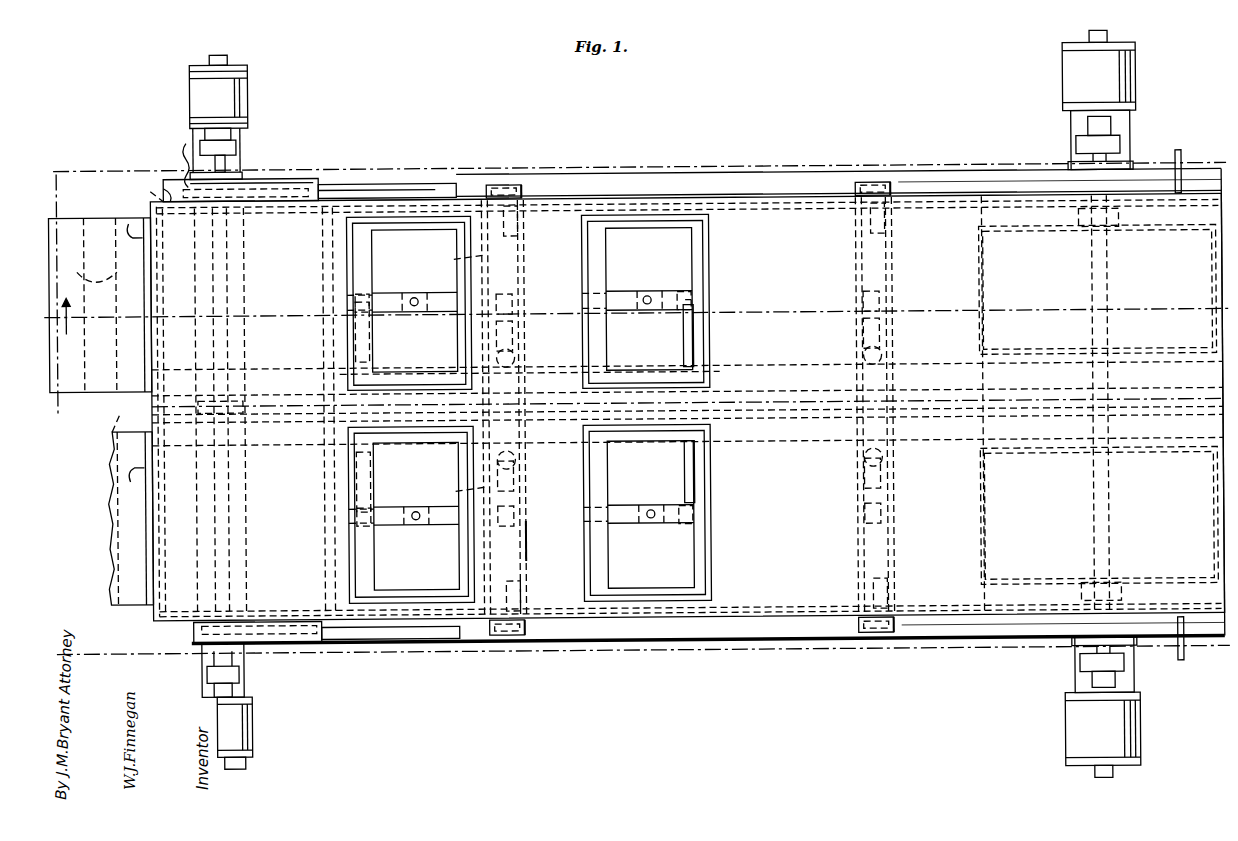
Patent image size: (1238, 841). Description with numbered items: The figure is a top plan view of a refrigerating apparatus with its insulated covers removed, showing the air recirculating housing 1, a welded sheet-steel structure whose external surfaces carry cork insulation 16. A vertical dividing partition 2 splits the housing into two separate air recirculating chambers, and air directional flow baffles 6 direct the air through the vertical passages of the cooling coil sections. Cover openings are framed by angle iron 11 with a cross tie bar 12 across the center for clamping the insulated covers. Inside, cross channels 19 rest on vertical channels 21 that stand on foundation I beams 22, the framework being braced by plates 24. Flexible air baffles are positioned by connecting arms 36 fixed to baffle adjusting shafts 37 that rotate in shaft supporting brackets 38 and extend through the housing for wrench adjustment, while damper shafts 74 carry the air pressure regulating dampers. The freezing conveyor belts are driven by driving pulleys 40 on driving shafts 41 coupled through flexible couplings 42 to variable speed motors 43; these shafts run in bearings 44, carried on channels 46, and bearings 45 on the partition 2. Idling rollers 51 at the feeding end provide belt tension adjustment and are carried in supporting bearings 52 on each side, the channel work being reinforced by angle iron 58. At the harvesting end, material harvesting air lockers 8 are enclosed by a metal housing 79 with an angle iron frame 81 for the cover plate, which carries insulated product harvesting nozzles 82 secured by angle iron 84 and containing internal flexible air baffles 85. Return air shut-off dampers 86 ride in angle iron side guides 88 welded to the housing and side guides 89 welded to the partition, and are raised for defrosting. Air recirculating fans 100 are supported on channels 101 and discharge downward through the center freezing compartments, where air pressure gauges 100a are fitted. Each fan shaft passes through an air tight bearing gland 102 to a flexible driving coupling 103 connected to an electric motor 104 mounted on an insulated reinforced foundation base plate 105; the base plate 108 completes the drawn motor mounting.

The air recirculating housing 1 is at (672, 197).
The vertical dividing partition 2 is at (278, 390).
The air directional flow baffle 6 is at (688, 407).
The material harvesting air locker 8 is at (268, 200).
The angle iron 11 is at (390, 244).
The cross tie bar 12 is at (418, 290).
The insulation 16 is at (620, 167).
The cross channel 19 is at (527, 550).
The vertical channel 21 is at (895, 184).
The foundation I beam 22 is at (740, 175).
The plate 24 is at (522, 228).
The connecting arm 36 is at (372, 348).
The baffle adjusting shaft 37 is at (515, 300).
The shaft supporting bracket 38 is at (514, 356).
The driving pulley 40 is at (248, 254).
The driving shaft 41 is at (232, 274).
The flexible coupling 42 is at (245, 142).
The variable speed motor 43 is at (250, 96).
The bearing 44 is at (232, 177).
The bearing 45 is at (200, 396).
The channel 46 is at (176, 155).
The idling roller 51 is at (525, 186).
The supporting bearing 52 is at (505, 184).
The angle iron 58 is at (372, 186).
The damper shaft 74 is at (750, 380).
The metal housing 79 is at (168, 176).
The angle iron frame 81 is at (148, 186).
The product harvesting nozzle 82 is at (75, 214).
The angle iron 84 is at (121, 399).
The internal flexible air baffle 85 is at (96, 412).
The return air shut-off damper 86 is at (456, 377).
The angle iron side guide 88 is at (470, 222).
The angle iron side guide 89 is at (470, 384).
The air recirculating fan 100 is at (985, 170).
The air pressure gauge 100a is at (1183, 162).
The channel 101 is at (950, 236).
The air tight bearing gland 102 is at (1070, 648).
The flexible driving coupling 103 is at (1078, 147).
The electric motor 104 is at (1138, 92).
The insulated reinforced foundation base plate 105 is at (1133, 128).
The base plate 108 is at (1118, 175).